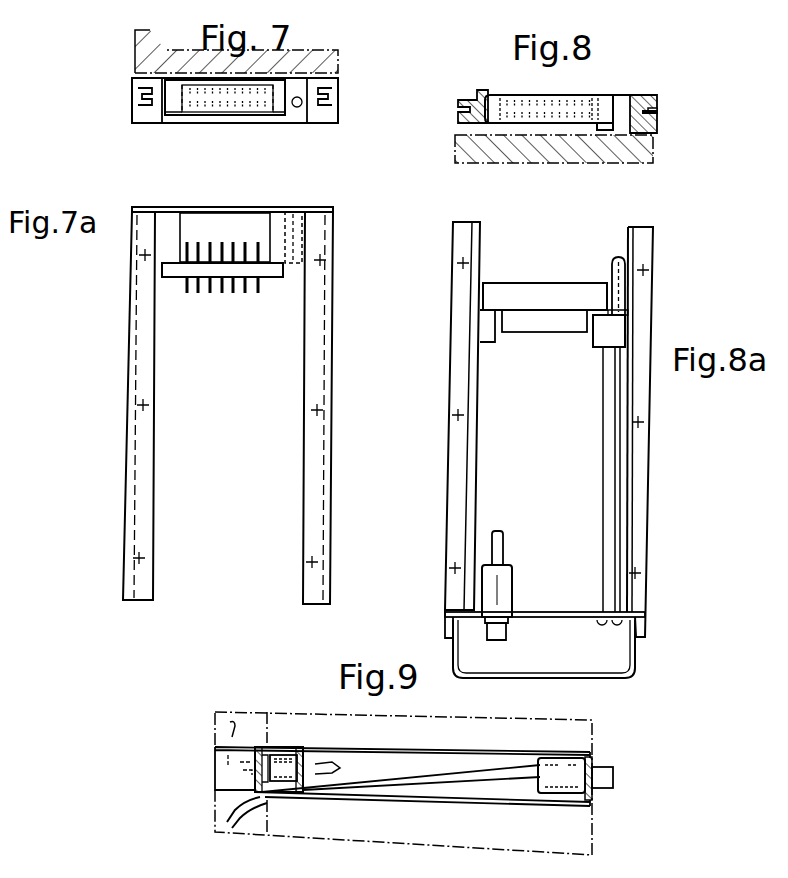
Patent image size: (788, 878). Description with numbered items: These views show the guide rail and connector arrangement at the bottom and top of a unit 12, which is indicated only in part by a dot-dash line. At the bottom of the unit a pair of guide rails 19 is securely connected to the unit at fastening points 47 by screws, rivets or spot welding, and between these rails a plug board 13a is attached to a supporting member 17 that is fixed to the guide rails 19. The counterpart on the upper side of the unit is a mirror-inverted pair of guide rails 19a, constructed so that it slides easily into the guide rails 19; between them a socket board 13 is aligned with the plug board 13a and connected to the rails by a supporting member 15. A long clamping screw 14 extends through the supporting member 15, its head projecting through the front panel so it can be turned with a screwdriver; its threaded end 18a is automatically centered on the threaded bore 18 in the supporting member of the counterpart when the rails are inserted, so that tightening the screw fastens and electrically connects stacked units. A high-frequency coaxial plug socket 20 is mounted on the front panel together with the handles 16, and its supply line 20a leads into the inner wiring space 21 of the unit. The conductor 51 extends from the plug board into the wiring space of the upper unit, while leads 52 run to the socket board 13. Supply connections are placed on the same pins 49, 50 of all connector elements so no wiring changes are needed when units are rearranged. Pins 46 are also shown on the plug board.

In FIG. 7, the unit 12 is at (338, 45).
In FIG. 8, the unit 12 is at (647, 157).
In FIG. 9, the unit 12 is at (578, 738).
In FIG. 8, the socket board 13 is at (496, 105).
In FIG. 8A, the socket board 13 is at (546, 293).
In FIG. 9, the socket board 13 is at (288, 761).
In FIG. 7, the plug board 13a is at (240, 97).
In FIG. 9, the plug board 13a is at (264, 756).
In FIG. 8A, the clamping screw 14 is at (614, 412).
In FIG. 8A, the supporting member 15 is at (612, 335).
In FIG. 8A, the handle 16 is at (632, 658).
In FIG. 7A, the supporting member 17 is at (275, 215).
In FIG. 7, the threaded bore 18 is at (300, 106).
In FIG. 7A, the threaded bore 18 is at (300, 245).
In FIG. 8A, the threaded end 18a is at (617, 292).
In FIG. 7, the guide rail 19 is at (148, 99).
In FIG. 7A, the guide rail 19 is at (318, 452).
In FIG. 8, the guide rail 19a is at (672, 112).
In FIG. 8A, the guide rail 19a is at (635, 478).
In FIG. 8A, the high-frequency coaxial plug socket 20 is at (497, 588).
In FIG. 9, the high-frequency coaxial plug socket 20 is at (605, 776).
In FIG. 9, the supply line 20a is at (430, 778).
In FIG. 9, the inner wiring space 21 is at (228, 735).
In FIG. 7A, the contact pins 46 is at (235, 275).
In FIG. 7A, the fastening points 47 is at (317, 410).
In FIG. 8, the pin 49 is at (585, 105).
In FIG. 8, the pin 50 is at (587, 117).
In FIG. 9, the conductor 51 is at (228, 762).
In FIG. 9, the leads 52 is at (320, 770).